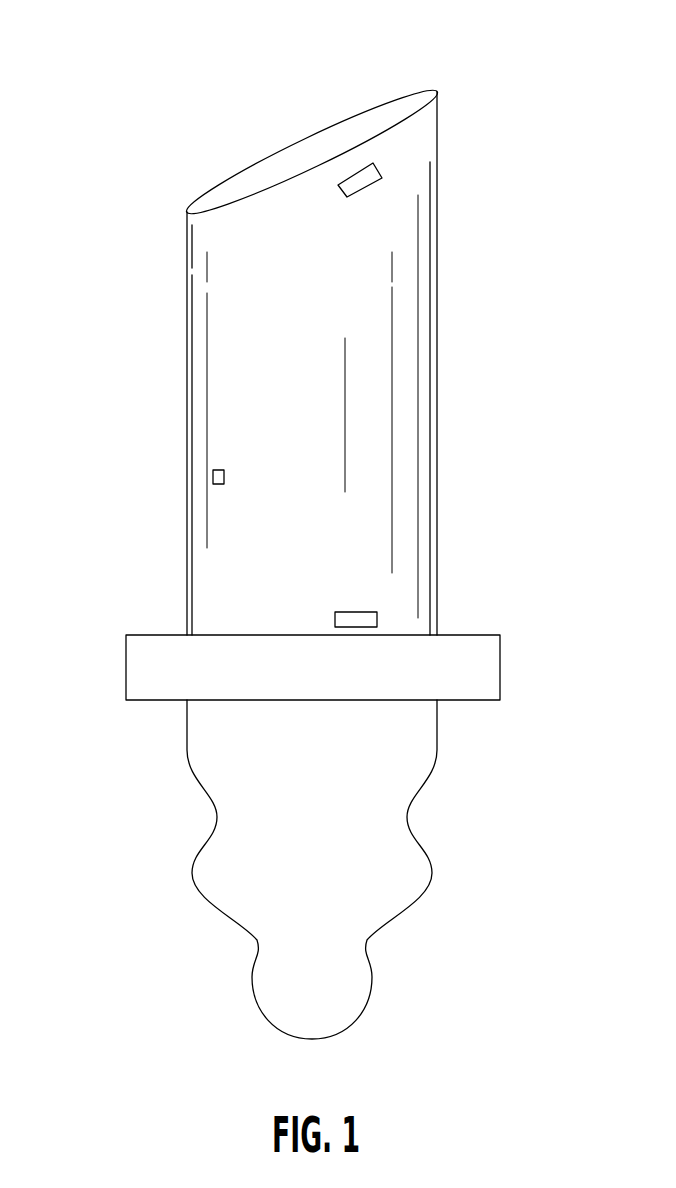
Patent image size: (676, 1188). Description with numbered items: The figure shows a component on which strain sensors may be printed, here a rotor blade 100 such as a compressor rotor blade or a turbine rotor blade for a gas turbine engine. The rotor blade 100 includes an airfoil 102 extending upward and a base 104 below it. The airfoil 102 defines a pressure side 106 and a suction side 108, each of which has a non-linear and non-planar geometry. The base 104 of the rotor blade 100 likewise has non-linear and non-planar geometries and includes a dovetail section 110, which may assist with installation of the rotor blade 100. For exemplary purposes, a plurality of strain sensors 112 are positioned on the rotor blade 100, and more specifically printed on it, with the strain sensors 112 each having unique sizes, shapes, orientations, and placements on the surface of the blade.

The rotor blade 100 is at (308, 528).
The airfoil 102 is at (407, 377).
The base 104 is at (398, 848).
The pressure side 106 is at (318, 105).
The suction side 108 is at (237, 383).
The dovetail section 110 is at (438, 932).
The strain sensors 112 is at (367, 186).